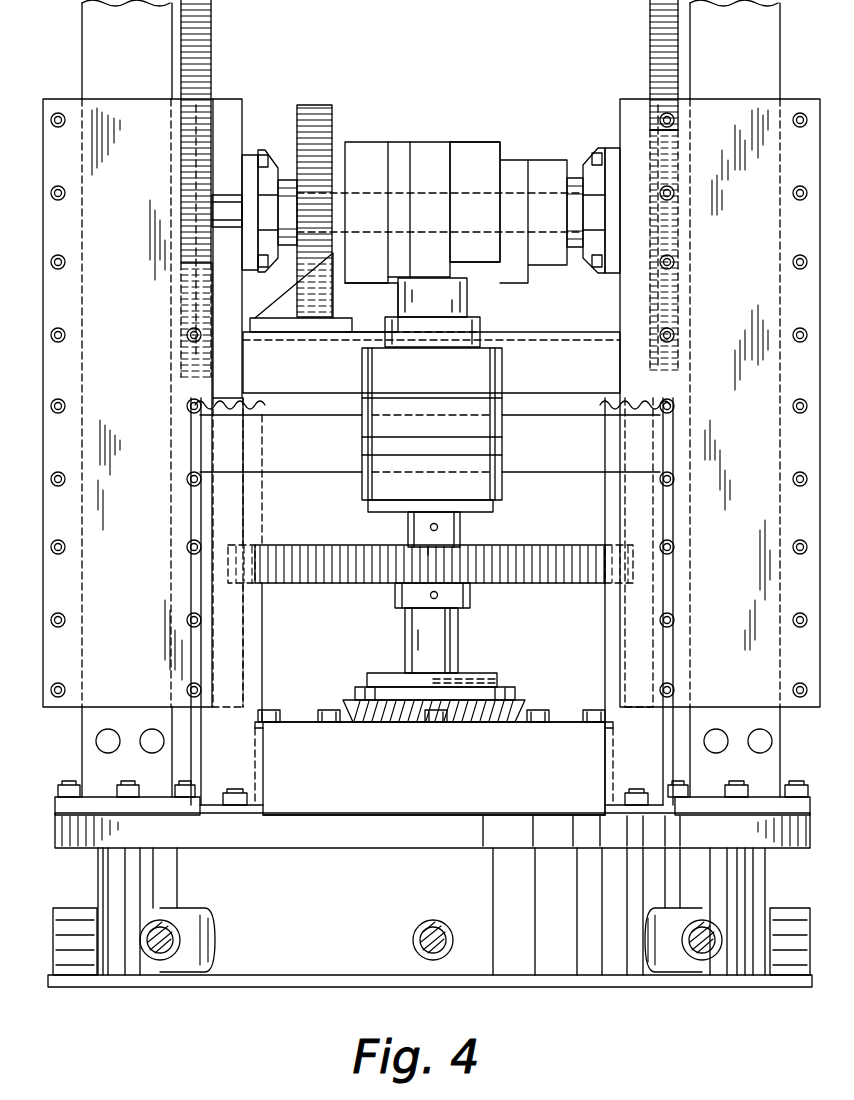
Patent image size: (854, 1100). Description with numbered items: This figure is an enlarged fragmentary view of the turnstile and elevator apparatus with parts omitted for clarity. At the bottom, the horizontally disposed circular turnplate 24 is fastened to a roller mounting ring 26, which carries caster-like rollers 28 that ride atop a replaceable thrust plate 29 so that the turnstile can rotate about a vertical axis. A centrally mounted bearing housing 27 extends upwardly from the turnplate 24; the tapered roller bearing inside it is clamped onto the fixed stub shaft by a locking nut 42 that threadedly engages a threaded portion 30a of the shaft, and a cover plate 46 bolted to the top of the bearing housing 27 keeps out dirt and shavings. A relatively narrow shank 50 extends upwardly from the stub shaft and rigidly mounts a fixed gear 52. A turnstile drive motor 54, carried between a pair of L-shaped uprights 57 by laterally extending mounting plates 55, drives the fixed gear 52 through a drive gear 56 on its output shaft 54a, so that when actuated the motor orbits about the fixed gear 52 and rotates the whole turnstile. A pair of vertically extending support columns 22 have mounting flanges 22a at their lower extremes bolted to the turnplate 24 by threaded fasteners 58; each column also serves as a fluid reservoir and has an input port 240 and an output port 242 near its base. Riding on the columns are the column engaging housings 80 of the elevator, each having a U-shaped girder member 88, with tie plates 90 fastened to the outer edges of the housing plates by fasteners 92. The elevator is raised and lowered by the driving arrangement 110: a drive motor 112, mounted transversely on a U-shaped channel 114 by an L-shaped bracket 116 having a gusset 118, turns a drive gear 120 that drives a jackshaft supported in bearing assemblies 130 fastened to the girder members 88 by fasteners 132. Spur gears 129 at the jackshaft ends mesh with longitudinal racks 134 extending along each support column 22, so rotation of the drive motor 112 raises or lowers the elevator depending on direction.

The support column 22 is at (120, 73).
The mounting flange 22a is at (178, 808).
The turnplate 24 is at (585, 848).
The roller mounting ring 26 is at (324, 911).
The bearing housing 27 is at (460, 770).
The roller 28 is at (456, 930).
The thrust plate 29 is at (320, 975).
The threaded portion 30a is at (490, 678).
The locking nut 42 is at (520, 705).
The cover plate 46 is at (302, 722).
The shank 50 is at (452, 640).
The fixed gear 52 is at (298, 583).
The turnstile drive motor 54 is at (490, 370).
The drive motor output shaft 54a is at (460, 513).
The mounting plate 55 is at (326, 448).
The drive gear 56 is at (431, 555).
The L-shaped upright 57 is at (248, 772).
The threaded fastener 58 is at (130, 784).
The column engaging housing 80 is at (148, 78).
The U-shaped girder member 88 is at (228, 100).
The tie plate 90 is at (140, 289).
The fastener 92 is at (194, 335).
The driving arrangement 110 is at (426, 128).
The drive motor 112 is at (470, 157).
The U-shaped channel 114 is at (540, 345).
The L-shaped bracket 116 is at (300, 325).
The gusset 118 is at (280, 310).
The drive gear 120 is at (320, 212).
The spur gear 129 is at (192, 215).
The bearing assembly 130 is at (250, 150).
The fastener 132 is at (264, 162).
The longitudinal rack 134 is at (206, 33).
The input port 240 is at (108, 729).
The output port 242 is at (152, 729).